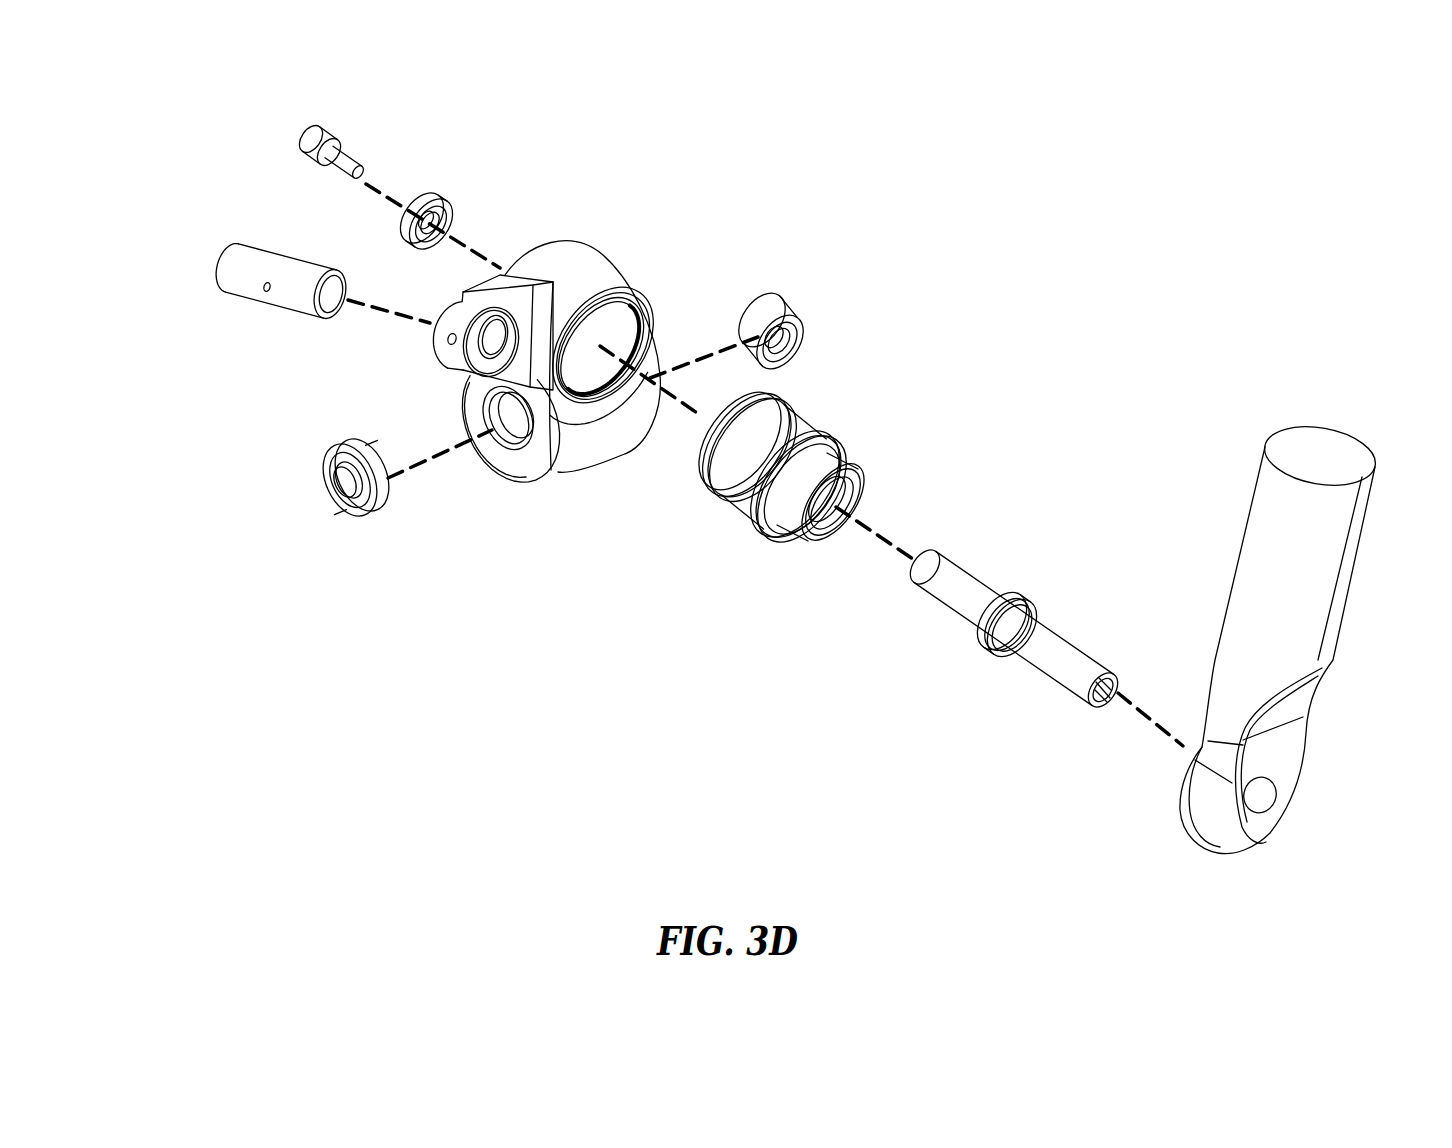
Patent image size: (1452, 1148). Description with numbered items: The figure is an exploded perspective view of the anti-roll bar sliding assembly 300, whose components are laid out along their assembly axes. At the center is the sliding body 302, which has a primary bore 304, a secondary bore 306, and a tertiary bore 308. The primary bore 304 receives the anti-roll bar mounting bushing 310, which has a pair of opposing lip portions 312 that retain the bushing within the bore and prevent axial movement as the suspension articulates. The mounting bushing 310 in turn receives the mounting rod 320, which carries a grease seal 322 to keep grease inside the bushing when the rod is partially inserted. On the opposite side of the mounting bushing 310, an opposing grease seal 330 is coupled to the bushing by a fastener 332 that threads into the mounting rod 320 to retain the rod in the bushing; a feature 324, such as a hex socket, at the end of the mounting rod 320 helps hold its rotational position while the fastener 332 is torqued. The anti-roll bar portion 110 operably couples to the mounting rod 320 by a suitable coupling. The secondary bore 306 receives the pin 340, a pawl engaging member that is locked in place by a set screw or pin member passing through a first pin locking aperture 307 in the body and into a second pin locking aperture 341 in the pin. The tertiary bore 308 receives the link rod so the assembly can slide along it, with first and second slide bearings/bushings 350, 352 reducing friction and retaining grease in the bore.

The anti-roll bar portion 110 is at (1320, 585).
The sliding assembly 300 is at (1105, 220).
The sliding body 302 is at (518, 354).
The primary bore 304 is at (638, 303).
The secondary bore 306 is at (497, 350).
The first pin locking aperture 307 is at (450, 338).
The tertiary bore 308 is at (540, 453).
The anti-roll bar mounting bushing 310 is at (814, 474).
The lip portions 312 is at (840, 447).
The mounting rod 320 is at (1018, 652).
The grease seal 322 is at (1022, 605).
The feature 324 is at (1108, 698).
The opposing grease seal 330 is at (446, 198).
The fastener 332 is at (347, 157).
The pin 340 is at (307, 305).
The second pin locking aperture 341 is at (268, 286).
The first slide bearing/bushing 350 is at (382, 490).
The second slide bearing/bushing 352 is at (790, 300).